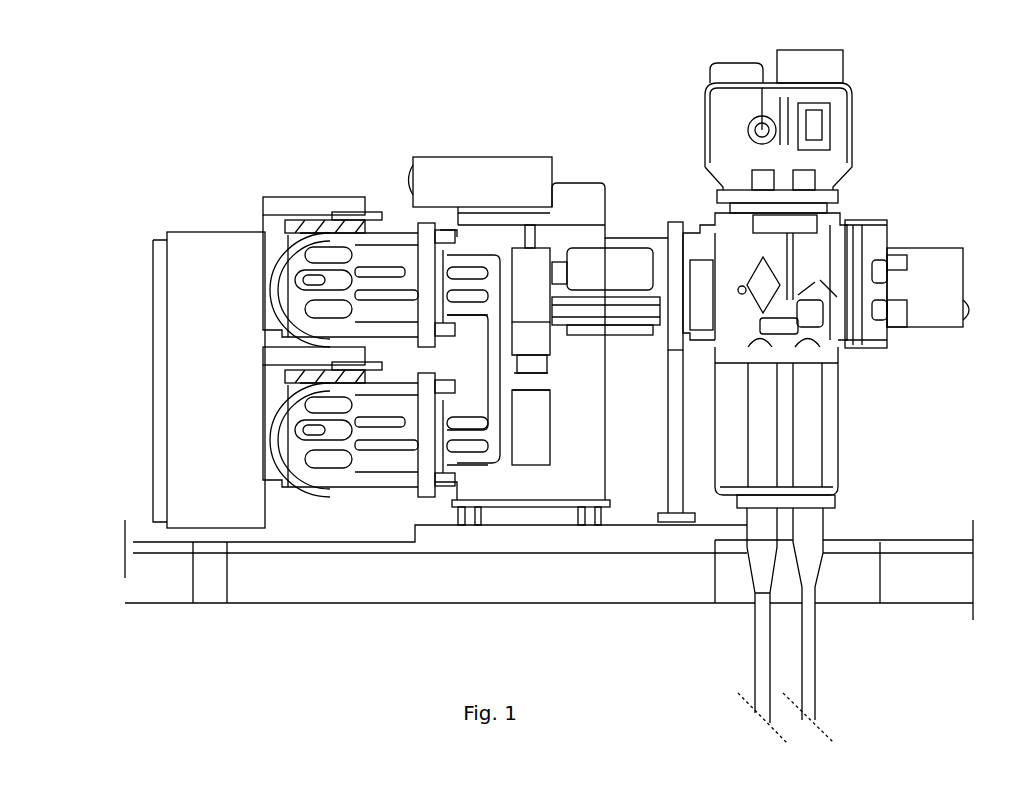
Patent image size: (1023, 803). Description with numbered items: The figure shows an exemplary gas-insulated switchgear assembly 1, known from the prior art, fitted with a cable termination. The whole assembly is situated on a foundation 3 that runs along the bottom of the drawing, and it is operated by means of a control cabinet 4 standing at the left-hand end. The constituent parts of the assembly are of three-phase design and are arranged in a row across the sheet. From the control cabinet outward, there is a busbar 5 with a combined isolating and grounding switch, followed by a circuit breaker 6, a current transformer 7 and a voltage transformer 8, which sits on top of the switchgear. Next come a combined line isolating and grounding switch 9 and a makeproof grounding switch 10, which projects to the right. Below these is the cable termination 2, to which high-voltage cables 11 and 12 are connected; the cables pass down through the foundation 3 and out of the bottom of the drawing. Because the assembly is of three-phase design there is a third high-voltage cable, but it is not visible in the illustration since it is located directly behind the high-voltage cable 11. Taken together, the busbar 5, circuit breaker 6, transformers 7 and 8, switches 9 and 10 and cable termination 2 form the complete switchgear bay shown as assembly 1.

The gas-insulated switchgear assembly 1 is at (410, 94).
The cable termination 2 is at (838, 433).
The foundation 3 is at (377, 580).
The control cabinet 4 is at (183, 262).
The busbar 5 is at (295, 213).
The circuit breaker 6 is at (494, 183).
The current transformer 7 is at (582, 270).
The voltage transformer 8 is at (833, 158).
The combined line isolating and grounding switch 9 is at (817, 247).
The makeproof grounding switch 10 is at (950, 260).
The high-voltage cable 11 is at (758, 623).
The high-voltage cable 12 is at (806, 628).